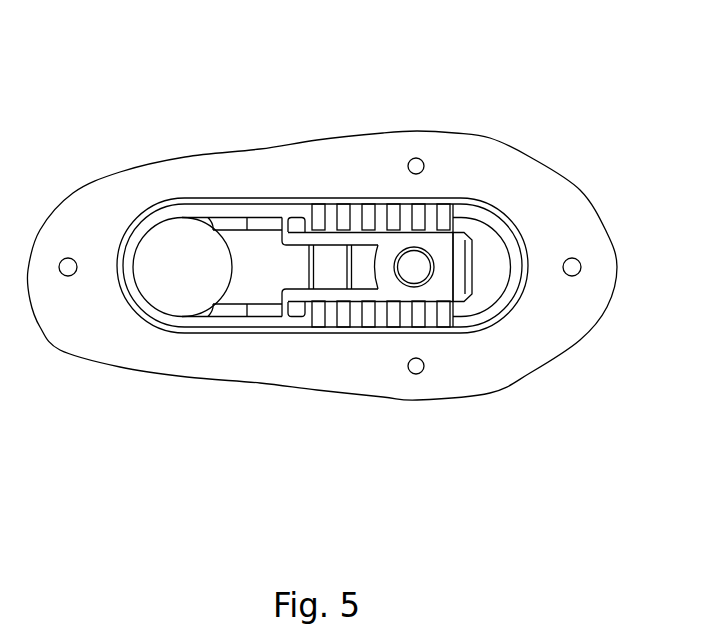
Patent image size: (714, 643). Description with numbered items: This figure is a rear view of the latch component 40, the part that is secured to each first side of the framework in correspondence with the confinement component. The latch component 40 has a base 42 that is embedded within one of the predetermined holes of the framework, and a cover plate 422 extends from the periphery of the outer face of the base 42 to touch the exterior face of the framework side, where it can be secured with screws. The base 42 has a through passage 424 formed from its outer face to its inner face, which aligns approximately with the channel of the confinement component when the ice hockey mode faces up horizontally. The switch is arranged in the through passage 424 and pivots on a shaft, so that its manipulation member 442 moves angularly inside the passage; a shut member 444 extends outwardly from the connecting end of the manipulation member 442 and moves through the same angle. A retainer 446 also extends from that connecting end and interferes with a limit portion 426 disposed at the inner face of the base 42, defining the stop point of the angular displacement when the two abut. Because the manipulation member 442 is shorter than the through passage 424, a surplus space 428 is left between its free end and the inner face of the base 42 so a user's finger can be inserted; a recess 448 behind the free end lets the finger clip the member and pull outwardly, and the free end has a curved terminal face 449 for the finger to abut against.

The latch component 40 is at (648, 530).
The base 42 is at (516, 222).
The cover plate 422 is at (497, 163).
The through passage 424 is at (300, 313).
The limit portion 426 is at (490, 276).
The surplus space 428 is at (169, 287).
The manipulation member 442 is at (296, 240).
The shut member 444 is at (417, 273).
The retainer 446 is at (463, 292).
The recess 448 is at (252, 285).
The terminal face 449 is at (227, 263).